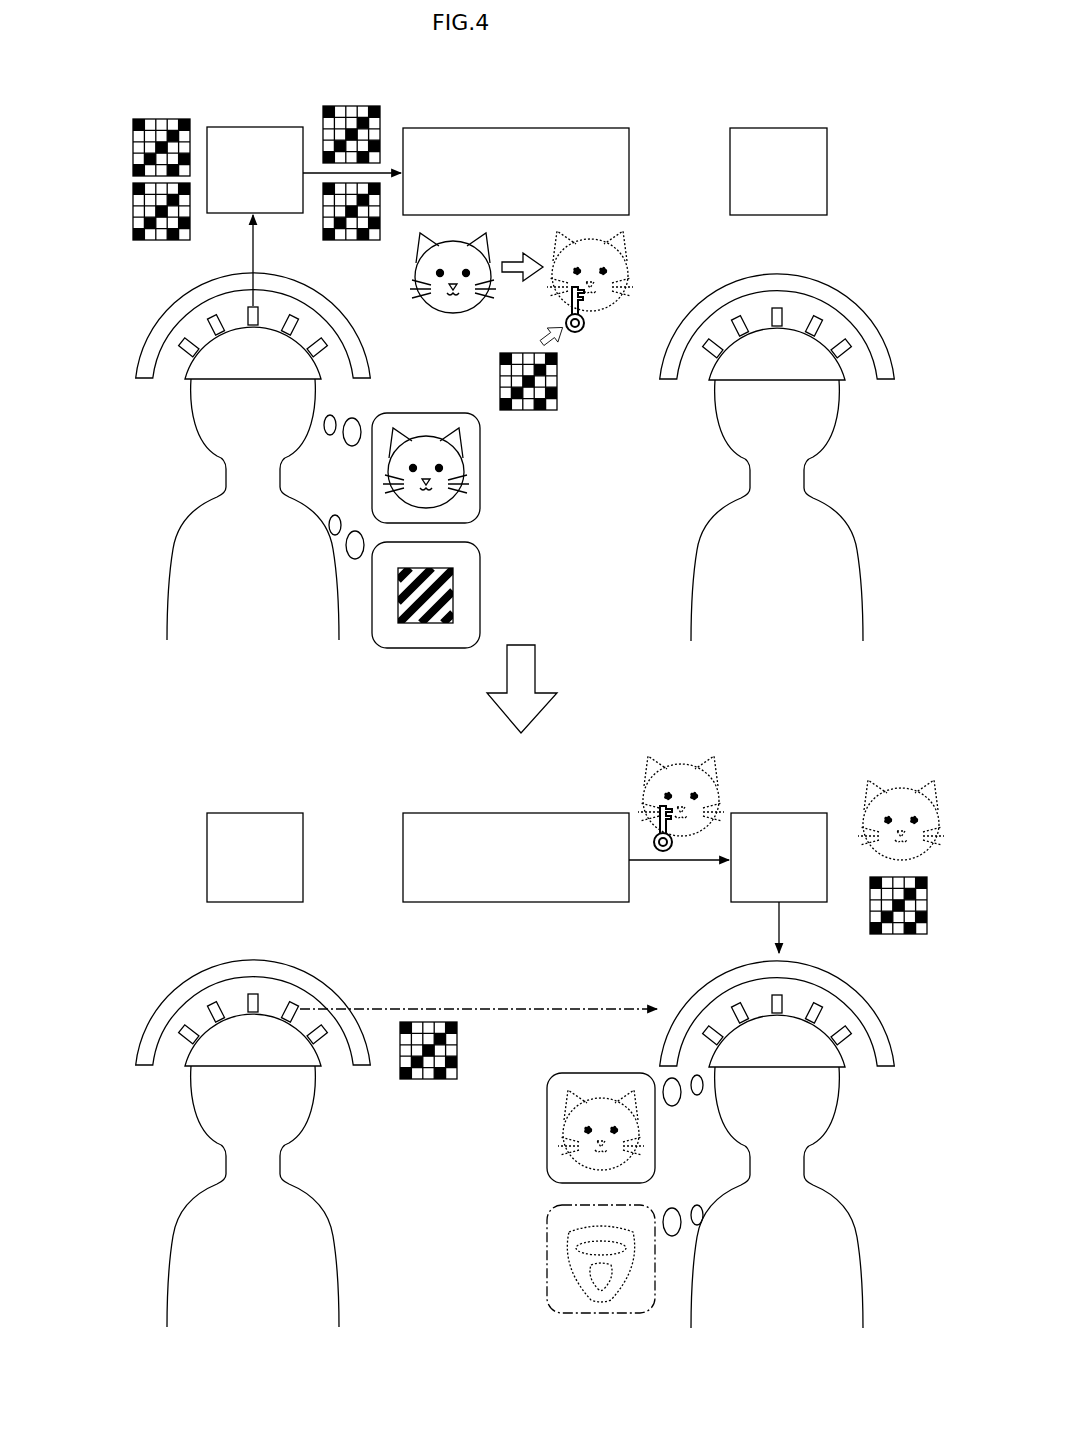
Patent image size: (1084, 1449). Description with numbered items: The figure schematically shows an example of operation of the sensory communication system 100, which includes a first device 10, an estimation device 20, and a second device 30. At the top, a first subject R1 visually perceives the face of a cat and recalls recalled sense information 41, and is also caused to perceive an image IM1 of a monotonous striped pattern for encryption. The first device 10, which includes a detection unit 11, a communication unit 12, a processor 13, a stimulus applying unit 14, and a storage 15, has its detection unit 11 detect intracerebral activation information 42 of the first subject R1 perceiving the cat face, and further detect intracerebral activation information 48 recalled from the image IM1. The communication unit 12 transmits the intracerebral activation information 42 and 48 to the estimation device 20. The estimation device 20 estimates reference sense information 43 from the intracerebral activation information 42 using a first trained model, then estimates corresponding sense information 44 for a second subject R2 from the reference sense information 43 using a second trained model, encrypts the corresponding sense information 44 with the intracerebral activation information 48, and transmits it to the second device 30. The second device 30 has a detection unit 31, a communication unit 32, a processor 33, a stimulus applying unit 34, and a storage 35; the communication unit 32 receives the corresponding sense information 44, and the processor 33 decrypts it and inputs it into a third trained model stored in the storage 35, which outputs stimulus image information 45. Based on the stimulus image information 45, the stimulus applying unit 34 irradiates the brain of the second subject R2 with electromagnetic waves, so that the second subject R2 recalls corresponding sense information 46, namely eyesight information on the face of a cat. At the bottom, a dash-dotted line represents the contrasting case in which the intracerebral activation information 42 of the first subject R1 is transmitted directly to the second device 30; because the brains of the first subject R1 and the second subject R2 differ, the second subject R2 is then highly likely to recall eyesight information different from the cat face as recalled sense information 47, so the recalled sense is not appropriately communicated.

The sensory communication system 100 is at (106, 96).
The first device 10 is at (221, 118).
The detection unit 11 is at (186, 369).
The communication unit 12 is at (259, 486).
The processor 13 is at (259, 486).
The stimulus applying unit 14 is at (148, 327).
The storage 15 is at (280, 137).
The estimation device 20 is at (457, 118).
The second device 30 is at (871, 130).
The detection unit 31 is at (846, 372).
The communication unit 32 is at (797, 487).
The processor 33 is at (797, 487).
The stimulus applying unit 34 is at (889, 330).
The storage 35 is at (808, 137).
The recalled sense information 41 is at (422, 443).
The intracerebral activation information 42 is at (133, 136).
The reference sense information 43 is at (455, 313).
The corresponding sense information 44 is at (590, 313).
The stimulus image information 45 is at (870, 915).
The corresponding sense information 46 is at (603, 1100).
The recalled sense information 47 is at (597, 1314).
The intracerebral activation information 48 is at (133, 198).
The first subject R1 is at (200, 462).
The second subject R2 is at (832, 467).
The image IM1 is at (480, 590).